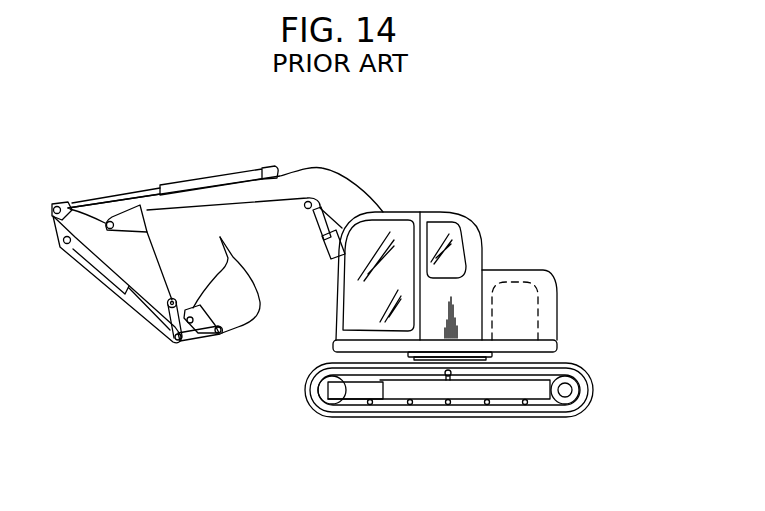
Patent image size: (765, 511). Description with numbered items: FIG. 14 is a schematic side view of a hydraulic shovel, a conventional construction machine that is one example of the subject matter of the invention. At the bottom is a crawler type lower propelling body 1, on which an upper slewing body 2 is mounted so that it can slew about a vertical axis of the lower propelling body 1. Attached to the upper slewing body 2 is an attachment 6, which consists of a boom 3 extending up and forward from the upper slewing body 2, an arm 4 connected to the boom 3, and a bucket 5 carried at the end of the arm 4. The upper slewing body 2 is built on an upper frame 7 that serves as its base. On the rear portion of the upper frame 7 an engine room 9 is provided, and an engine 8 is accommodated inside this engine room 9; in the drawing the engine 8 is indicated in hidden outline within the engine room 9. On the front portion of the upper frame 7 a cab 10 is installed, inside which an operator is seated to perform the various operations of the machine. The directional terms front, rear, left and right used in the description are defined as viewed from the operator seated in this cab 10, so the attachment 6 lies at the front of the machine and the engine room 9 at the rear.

The lower propelling body 1 is at (441, 417).
The upper slewing body 2 is at (444, 205).
The boom 3 is at (352, 185).
The arm 4 is at (117, 255).
The bucket 5 is at (260, 302).
The attachment 6 is at (302, 157).
The upper frame 7 is at (391, 351).
The engine 8 is at (525, 272).
The engine room 9 is at (558, 313).
The cab 10 is at (480, 243).